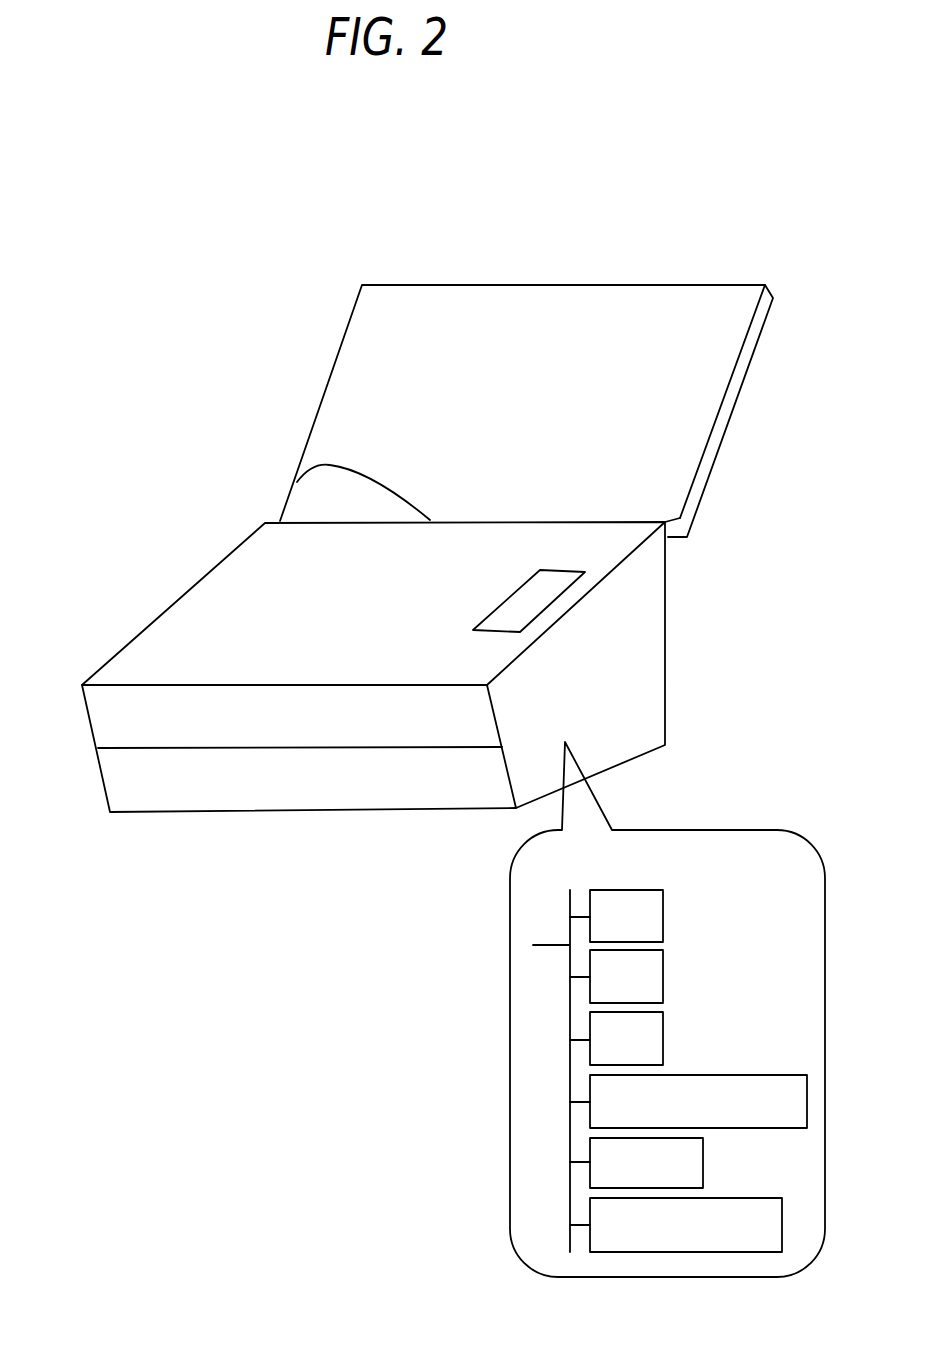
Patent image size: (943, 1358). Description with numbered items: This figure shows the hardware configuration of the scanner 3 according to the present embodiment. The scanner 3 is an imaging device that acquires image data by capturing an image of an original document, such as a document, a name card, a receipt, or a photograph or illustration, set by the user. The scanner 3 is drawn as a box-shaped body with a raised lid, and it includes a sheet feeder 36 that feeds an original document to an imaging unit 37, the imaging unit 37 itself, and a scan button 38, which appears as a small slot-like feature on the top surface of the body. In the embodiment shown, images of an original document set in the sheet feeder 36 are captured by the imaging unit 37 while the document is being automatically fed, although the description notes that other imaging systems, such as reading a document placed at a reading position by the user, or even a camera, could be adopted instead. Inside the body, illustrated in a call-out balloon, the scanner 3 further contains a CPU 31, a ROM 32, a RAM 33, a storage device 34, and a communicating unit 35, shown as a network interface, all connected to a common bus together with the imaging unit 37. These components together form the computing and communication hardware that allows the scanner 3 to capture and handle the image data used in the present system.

The scanner 3 is at (168, 603).
The CPU 31 is at (665, 912).
The ROM 32 is at (665, 972).
The RAM 33 is at (665, 1032).
The storage device 34 is at (702, 1073).
The communicating unit 35 is at (705, 1187).
The sheet feeder 36 is at (297, 482).
The imaging unit 37 is at (745, 1198).
The scan button 38 is at (552, 603).